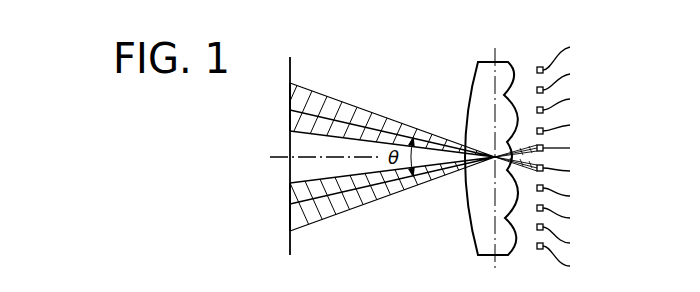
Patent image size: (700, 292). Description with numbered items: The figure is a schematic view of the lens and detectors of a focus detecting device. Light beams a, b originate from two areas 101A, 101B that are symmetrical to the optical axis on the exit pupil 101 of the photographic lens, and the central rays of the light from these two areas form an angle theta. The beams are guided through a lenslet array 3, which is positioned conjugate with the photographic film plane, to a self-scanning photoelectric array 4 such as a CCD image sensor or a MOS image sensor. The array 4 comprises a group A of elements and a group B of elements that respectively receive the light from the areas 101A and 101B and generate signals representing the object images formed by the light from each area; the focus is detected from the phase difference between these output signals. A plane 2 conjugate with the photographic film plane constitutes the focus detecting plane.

The exit pupil 101 is at (290, 246).
The first area of exit pupil 101A is at (290, 197).
The second area of exit pupil 101B is at (290, 121).
The light beam from area 101A a is at (357, 122).
The light beam from area 101B b is at (374, 192).
The lenslet array 3 is at (472, 230).
The focus detecting plane 2 is at (497, 257).
The self-scanning photoelectric array 4 is at (633, 47).